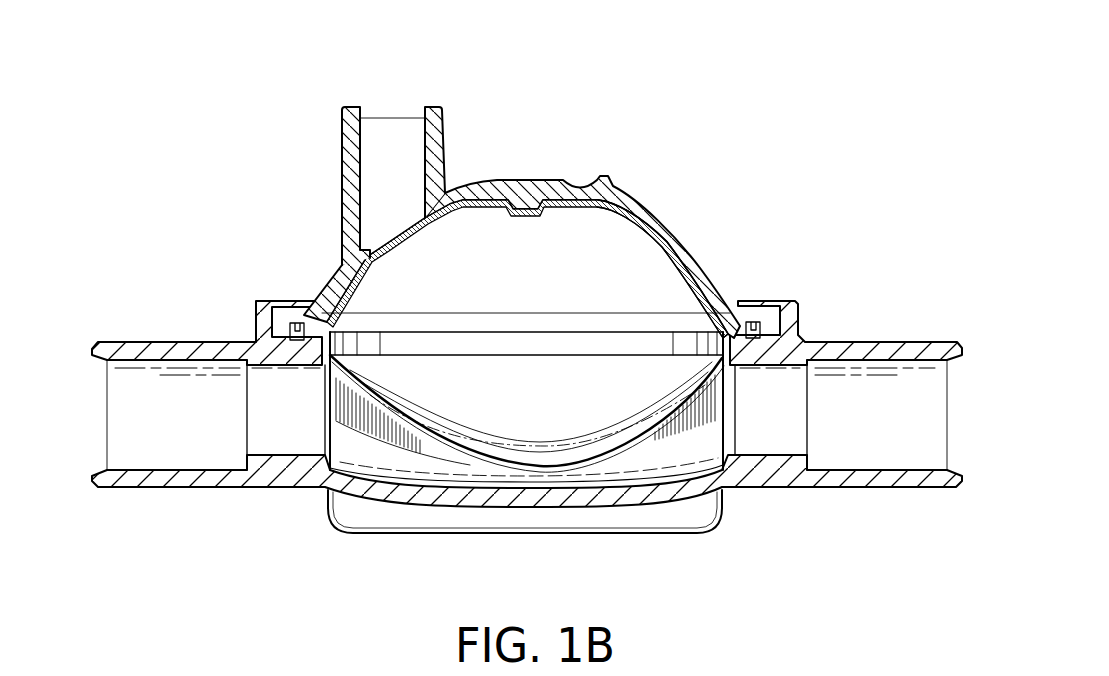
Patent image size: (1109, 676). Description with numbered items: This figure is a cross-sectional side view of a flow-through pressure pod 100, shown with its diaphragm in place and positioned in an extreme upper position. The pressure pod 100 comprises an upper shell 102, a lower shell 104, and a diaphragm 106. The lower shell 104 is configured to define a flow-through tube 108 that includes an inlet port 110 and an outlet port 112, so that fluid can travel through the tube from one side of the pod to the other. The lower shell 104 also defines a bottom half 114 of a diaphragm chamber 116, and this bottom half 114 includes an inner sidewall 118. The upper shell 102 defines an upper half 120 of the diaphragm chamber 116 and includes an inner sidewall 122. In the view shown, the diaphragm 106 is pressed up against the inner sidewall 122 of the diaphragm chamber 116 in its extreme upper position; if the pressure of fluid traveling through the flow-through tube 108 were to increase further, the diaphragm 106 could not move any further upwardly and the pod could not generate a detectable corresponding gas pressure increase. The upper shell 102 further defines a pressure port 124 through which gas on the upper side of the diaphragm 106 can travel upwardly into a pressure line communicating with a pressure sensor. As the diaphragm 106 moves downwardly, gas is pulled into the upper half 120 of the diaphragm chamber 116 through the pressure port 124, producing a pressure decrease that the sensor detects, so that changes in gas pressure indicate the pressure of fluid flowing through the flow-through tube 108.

The pressure pod 100 is at (526, 330).
The upper shell 102 is at (698, 250).
The lower shell 104 is at (282, 490).
The diaphragm 106 is at (410, 245).
The flow-through tube 108 is at (178, 418).
The inlet port 110 is at (962, 430).
The outlet port 112 is at (90, 387).
The bottom half of diaphragm chamber 114 is at (577, 430).
The diaphragm chamber 116 is at (453, 413).
The inner sidewall 118 is at (479, 461).
The upper half of diaphragm chamber 120 is at (403, 273).
The inner sidewall 122 is at (632, 220).
The pressure port 124 is at (342, 157).